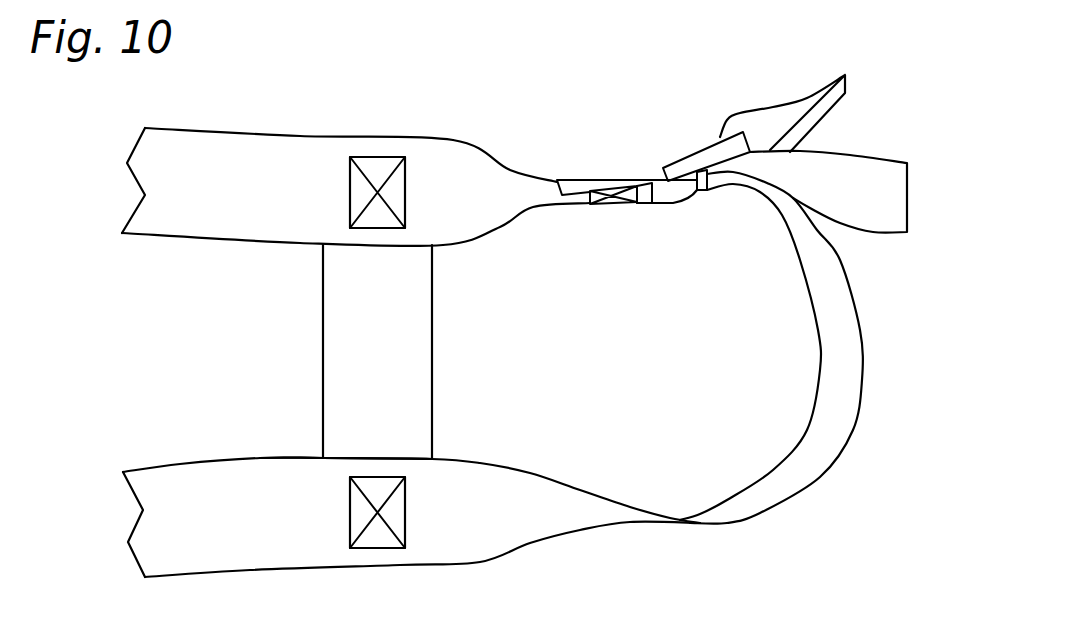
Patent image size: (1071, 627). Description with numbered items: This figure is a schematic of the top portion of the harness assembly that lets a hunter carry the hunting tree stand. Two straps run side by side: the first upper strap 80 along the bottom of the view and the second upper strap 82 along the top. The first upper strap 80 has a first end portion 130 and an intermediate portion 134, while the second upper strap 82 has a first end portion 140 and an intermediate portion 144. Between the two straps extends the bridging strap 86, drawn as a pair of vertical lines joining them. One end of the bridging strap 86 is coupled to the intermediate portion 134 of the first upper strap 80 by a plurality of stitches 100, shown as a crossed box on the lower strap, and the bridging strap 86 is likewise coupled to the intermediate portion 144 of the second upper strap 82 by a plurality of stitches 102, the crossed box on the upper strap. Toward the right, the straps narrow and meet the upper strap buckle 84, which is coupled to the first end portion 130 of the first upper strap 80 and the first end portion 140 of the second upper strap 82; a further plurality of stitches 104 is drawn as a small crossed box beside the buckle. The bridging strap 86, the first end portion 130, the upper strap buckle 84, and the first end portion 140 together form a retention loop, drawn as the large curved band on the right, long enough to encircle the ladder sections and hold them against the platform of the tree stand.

The first upper strap 80 is at (200, 580).
The second upper strap 82 is at (233, 135).
The upper strap buckle 84 is at (702, 148).
The bridging strap 86 is at (322, 320).
The plurality of stitches 100 is at (377, 550).
The plurality of stitches 102 is at (378, 157).
The plurality of stitches 104 is at (613, 205).
The first end portion 130 is at (800, 227).
The intermediate portion 134 is at (333, 553).
The first end portion 140 is at (657, 192).
The intermediate portion 144 is at (413, 147).